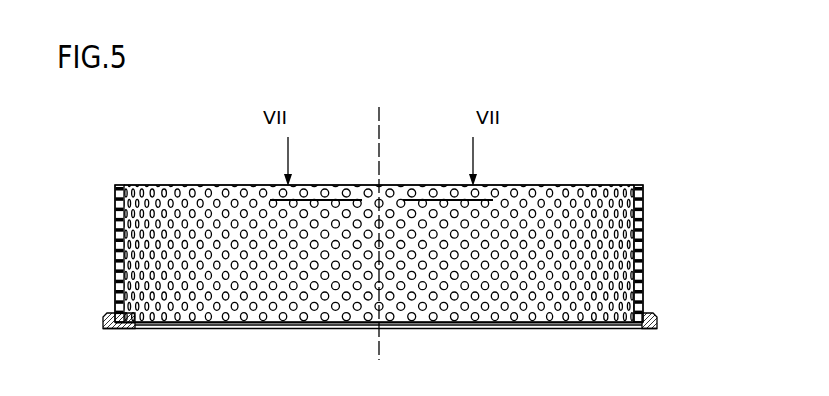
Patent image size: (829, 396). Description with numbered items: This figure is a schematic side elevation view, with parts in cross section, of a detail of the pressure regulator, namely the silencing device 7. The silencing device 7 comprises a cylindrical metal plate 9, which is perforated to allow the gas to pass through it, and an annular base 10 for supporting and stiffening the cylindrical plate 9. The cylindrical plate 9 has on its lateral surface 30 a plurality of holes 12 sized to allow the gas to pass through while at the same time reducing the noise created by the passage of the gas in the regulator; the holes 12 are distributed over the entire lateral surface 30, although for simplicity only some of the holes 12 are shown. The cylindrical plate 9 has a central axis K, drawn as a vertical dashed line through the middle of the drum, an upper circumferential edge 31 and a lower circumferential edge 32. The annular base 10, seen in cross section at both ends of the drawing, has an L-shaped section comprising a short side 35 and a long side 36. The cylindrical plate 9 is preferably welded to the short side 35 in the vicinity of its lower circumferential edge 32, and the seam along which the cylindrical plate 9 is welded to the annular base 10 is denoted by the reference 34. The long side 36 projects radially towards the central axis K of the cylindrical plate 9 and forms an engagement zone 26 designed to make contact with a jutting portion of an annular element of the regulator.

The silencing device 7 is at (584, 148).
The cylindrical metal plate 9 is at (112, 195).
The annular base 10 is at (659, 330).
The holes 12 is at (357, 185).
The engagement zone 26 is at (632, 313).
The lateral surface 30 is at (644, 187).
The upper circumferential edge 31 is at (537, 170).
The lower circumferential edge 32 is at (630, 316).
The seam 34 is at (647, 309).
The short side 35 is at (92, 320).
The long side 36 is at (131, 320).
The central axis K is at (381, 143).